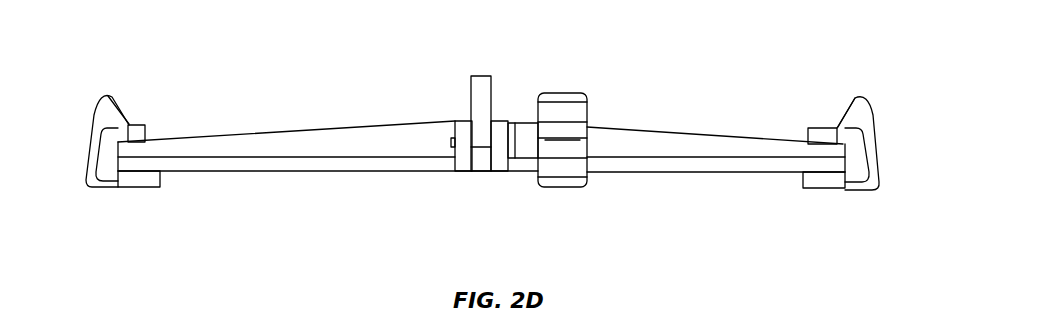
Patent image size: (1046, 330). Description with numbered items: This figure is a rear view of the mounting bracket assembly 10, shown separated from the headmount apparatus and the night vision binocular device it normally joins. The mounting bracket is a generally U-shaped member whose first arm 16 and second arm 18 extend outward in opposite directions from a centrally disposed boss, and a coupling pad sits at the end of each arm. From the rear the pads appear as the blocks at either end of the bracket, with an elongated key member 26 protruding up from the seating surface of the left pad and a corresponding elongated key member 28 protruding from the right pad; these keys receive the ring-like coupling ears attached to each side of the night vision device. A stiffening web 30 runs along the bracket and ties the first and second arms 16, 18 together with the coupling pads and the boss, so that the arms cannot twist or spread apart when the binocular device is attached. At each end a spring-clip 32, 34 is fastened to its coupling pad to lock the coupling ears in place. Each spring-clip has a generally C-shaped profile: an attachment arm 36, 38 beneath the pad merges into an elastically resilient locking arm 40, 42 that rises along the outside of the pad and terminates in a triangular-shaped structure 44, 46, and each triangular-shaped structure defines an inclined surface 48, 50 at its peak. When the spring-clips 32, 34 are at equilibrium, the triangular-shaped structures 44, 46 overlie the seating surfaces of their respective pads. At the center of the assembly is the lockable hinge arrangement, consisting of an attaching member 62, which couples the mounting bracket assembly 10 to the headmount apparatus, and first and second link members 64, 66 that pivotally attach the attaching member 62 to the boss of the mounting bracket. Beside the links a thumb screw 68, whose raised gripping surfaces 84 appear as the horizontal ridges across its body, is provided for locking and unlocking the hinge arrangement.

The mounting bracket assembly 10 is at (785, 23).
The first arm 16 is at (230, 133).
The second arm 18 is at (760, 138).
The elongated key member 26 is at (137, 135).
The elongated key member 28 is at (818, 132).
The stiffening web 30 is at (390, 162).
The spring-clip 32 is at (82, 186).
The spring-clip 34 is at (885, 193).
The attachment arm 36 is at (137, 178).
The attachment arm 38 is at (832, 183).
The locking arm 40 is at (88, 135).
The locking arm 42 is at (881, 155).
The triangular-shaped structure 44 is at (104, 114).
The triangular-shaped structure 46 is at (857, 119).
The inclined surface 48 is at (126, 121).
The inclined surface 50 is at (843, 118).
The attaching member 62 is at (482, 83).
The first link member 64 is at (462, 160).
The second link member 66 is at (498, 158).
The thumb screw 68 is at (562, 93).
The raised gripping surfaces 84 is at (570, 155).